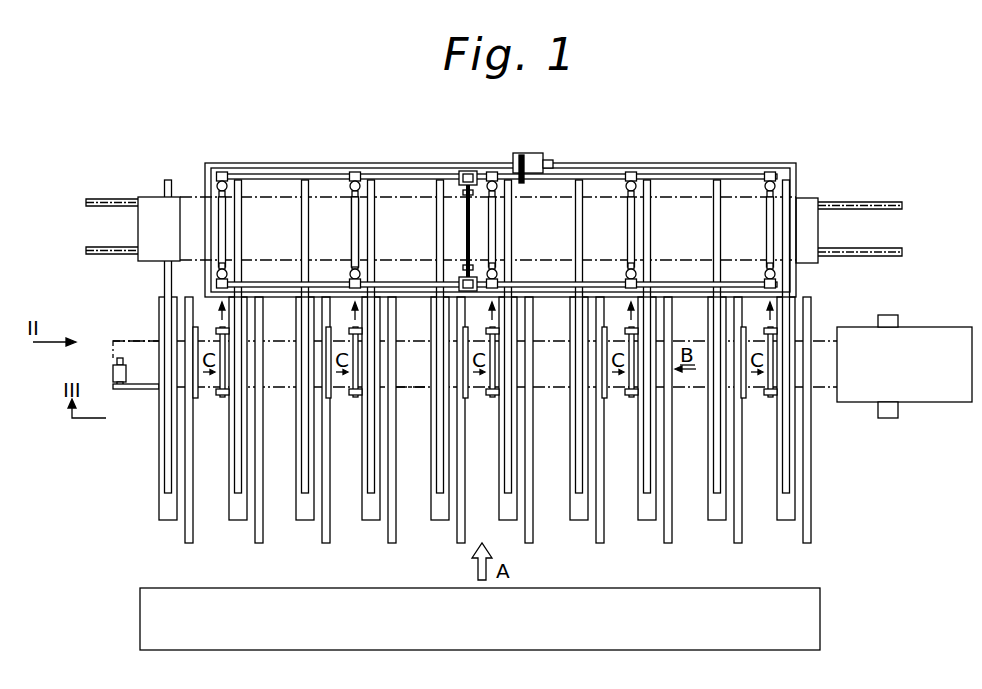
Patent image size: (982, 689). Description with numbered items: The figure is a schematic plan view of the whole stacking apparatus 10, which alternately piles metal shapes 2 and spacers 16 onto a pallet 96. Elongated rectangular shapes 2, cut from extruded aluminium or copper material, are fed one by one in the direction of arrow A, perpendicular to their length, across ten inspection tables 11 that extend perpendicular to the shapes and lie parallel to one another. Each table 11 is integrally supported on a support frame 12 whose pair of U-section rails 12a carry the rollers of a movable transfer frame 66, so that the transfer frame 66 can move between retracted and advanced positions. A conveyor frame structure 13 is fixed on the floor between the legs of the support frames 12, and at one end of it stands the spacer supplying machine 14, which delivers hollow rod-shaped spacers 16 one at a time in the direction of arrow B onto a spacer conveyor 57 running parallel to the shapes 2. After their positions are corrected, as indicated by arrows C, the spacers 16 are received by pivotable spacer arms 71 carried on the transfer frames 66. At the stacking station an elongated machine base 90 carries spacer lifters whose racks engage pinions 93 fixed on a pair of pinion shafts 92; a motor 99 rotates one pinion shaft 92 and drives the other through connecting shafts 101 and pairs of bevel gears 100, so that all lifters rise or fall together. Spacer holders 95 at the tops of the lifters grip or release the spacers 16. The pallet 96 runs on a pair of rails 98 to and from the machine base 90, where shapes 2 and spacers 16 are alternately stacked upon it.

The elongated shape 2 is at (808, 615).
The stacking apparatus 10 is at (494, 204).
The inspection table 11 is at (665, 514).
The support frame 12 is at (665, 381).
The rail 12a is at (647, 522).
The conveyor frame structure 13 is at (563, 390).
The spacer supplying machine 14 is at (931, 320).
The spacer 16 is at (470, 399).
The spacer conveyor 57 is at (418, 392).
The transfer frame 66 is at (645, 463).
The spacer arm 71 is at (768, 395).
The machine base 90 is at (292, 163).
The pinion shaft 92 is at (612, 176).
The pinion 93 is at (362, 182).
The spacer holder 95 is at (352, 172).
The pallet 96 is at (422, 195).
The rail 98 is at (126, 197).
The motor 99 is at (541, 153).
The bevel gears 100 is at (471, 173).
The connecting shaft 101 is at (463, 222).